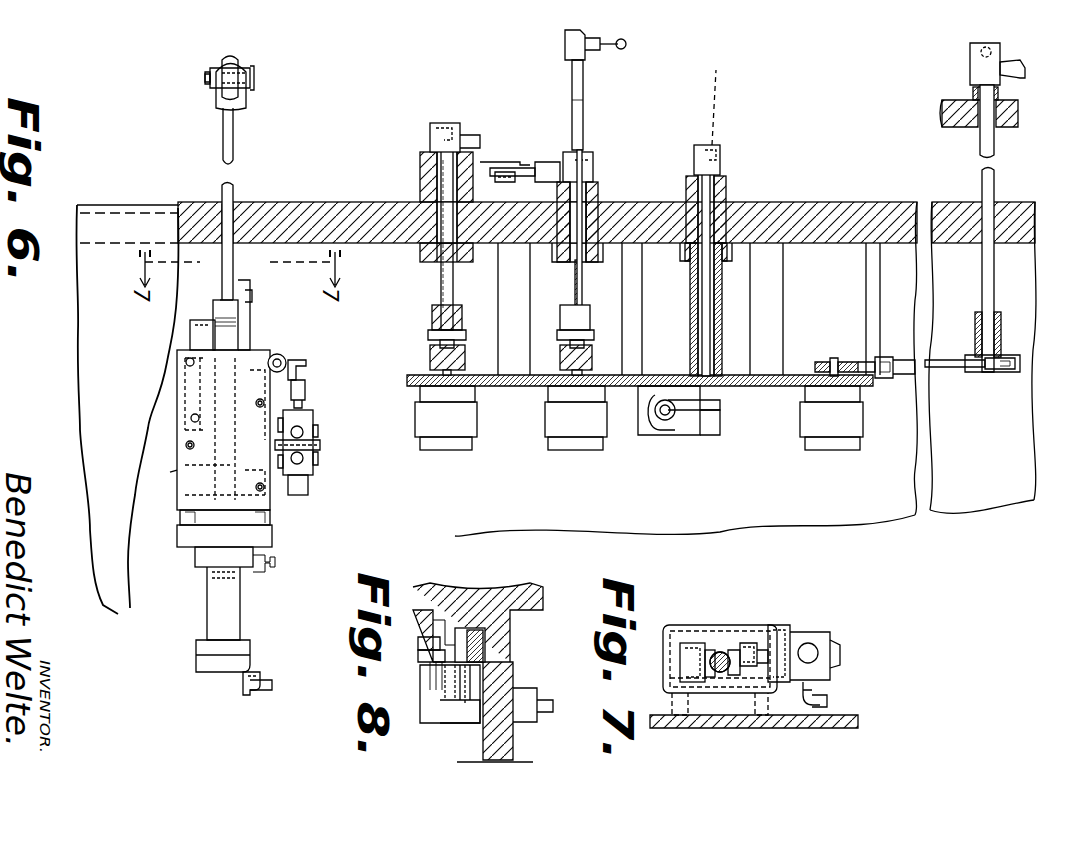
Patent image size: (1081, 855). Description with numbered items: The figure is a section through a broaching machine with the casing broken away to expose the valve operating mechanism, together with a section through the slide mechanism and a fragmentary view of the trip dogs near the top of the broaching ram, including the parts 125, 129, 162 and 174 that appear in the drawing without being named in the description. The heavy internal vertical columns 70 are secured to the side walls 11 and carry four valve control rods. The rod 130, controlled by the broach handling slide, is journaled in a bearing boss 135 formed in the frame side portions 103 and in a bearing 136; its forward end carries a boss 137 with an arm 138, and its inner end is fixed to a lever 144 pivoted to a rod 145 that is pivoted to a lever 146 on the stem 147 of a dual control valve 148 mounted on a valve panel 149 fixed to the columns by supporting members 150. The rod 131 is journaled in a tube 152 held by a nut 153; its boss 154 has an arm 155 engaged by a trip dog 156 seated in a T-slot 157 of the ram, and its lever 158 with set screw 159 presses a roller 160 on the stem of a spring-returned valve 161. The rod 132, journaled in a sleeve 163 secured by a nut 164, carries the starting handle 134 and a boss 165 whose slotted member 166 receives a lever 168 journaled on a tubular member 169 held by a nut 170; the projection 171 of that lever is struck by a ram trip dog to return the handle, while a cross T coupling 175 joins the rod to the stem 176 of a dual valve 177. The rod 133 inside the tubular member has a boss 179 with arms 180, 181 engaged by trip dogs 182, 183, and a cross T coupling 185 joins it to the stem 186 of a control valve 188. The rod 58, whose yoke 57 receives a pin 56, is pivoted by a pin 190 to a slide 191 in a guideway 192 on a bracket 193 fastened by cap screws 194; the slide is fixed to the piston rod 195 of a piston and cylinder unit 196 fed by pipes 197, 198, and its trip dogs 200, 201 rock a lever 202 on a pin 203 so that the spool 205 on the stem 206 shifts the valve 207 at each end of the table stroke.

In FIG. 7, the side walls 11 is at (805, 728).
In FIG. 6, the pin 56 is at (206, 78).
In FIG. 6, the yoke 57 is at (228, 62).
In FIG. 6, the rod 58 is at (233, 145).
In FIG. 7, the rod 58 is at (723, 652).
In FIG. 6, the vertical columns 70 is at (812, 202).
In FIG. 6, the vertical side portions 103 is at (950, 100).
In FIG. 6, the housing 125 is at (636, 349).
In FIG. 6, the pivot 129 is at (1000, 45).
In FIG. 6, the valve control rod 130 is at (982, 178).
In FIG. 6, the valve control rod 131 is at (718, 312).
In FIG. 6, the valve control rod 132 is at (584, 293).
In FIG. 6, the valve control rod 133 is at (450, 285).
In FIG. 6, the starting handle 134 is at (607, 58).
In FIG. 6, the bearing boss 135 is at (1020, 97).
In FIG. 6, the bearing 136 is at (1000, 335).
In FIG. 6, the boss 137 is at (970, 62).
In FIG. 6, the arm 138 is at (1024, 68).
In FIG. 6, the lever 144 is at (1008, 372).
In FIG. 6, the rod 145 is at (962, 368).
In FIG. 6, the lever 146 is at (866, 358).
In FIG. 6, the valve stem 147 is at (833, 360).
In FIG. 6, the control valve 148 is at (855, 420).
In FIG. 6, the valve panel 149 is at (740, 386).
In FIG. 6, the supporting members 150 is at (523, 300).
In FIG. 6, the tube 152 is at (695, 295).
In FIG. 6, the nut 153 is at (718, 300).
In FIG. 6, the boss 154 is at (694, 154).
In FIG. 8, the boss 154 is at (447, 724).
In FIG. 6, the arm 155 is at (714, 140).
In FIG. 8, the arm 155 is at (465, 712).
In FIG. 8, the trip dog 156 is at (418, 655).
In FIG. 8, the T-slot 157 is at (418, 640).
In FIG. 6, the lever 158 is at (672, 420).
In FIG. 6, the adjustable set screw 159 is at (666, 432).
In FIG. 6, the roller 160 is at (656, 435).
In FIG. 6, the valve 161 is at (692, 415).
In FIG. 6, the block 162 is at (593, 165).
In FIG. 6, the sleeve 163 is at (592, 314).
In FIG. 6, the nut 164 is at (603, 255).
In FIG. 6, the boss 165 is at (568, 182).
In FIG. 6, the slotted member 166 is at (553, 162).
In FIG. 6, the lever 168 is at (527, 163).
In FIG. 6, the tubular member 169 is at (420, 178).
In FIG. 6, the nut 170 is at (420, 255).
In FIG. 6, the projection 171 is at (527, 188).
In FIG. 8, the projection 171 is at (513, 705).
In FIG. 8, the housing 174 is at (513, 652).
In FIG. 6, the cross T coupling 175 is at (603, 348).
In FIG. 6, the valve stem 176 is at (596, 390).
In FIG. 6, the dual valve 177 is at (595, 428).
In FIG. 6, the boss 179 is at (430, 132).
In FIG. 6, the arm 180 is at (462, 135).
In FIG. 6, the arm 181 is at (440, 123).
In FIG. 8, the trip dog 182 is at (428, 690).
In FIG. 8, the trip dog 183 is at (428, 675).
In FIG. 6, the cross T coupling 185 is at (417, 341).
In FIG. 6, the valve stem 186 is at (465, 390).
In FIG. 6, the control valve 188 is at (470, 430).
In FIG. 6, the pin 190 is at (245, 350).
In FIG. 6, the slide 191 is at (238, 333).
In FIG. 7, the slide 191 is at (712, 650).
In FIG. 7, the guideway 192 is at (700, 643).
In FIG. 6, the bracket 193 is at (288, 530).
In FIG. 7, the bracket 193 is at (663, 688).
In FIG. 7, the cap screws 194 is at (800, 686).
In FIG. 6, the piston rod 195 is at (177, 470).
In FIG. 6, the piston and cylinder unit 196 is at (248, 609).
In FIG. 6, the pipe 197 is at (288, 575).
In FIG. 6, the pipe 198 is at (262, 695).
In FIG. 6, the trip dog 200 is at (252, 296).
In FIG. 7, the trip dog 200 is at (750, 643).
In FIG. 6, the trip dog 201 is at (223, 430).
In FIG. 6, the lever 202 is at (283, 357).
In FIG. 7, the lever 202 is at (765, 650).
In FIG. 6, the pin 203 is at (305, 375).
In FIG. 7, the pin 203 is at (785, 625).
In FIG. 6, the spool 205 is at (313, 420).
In FIG. 6, the valve stem 206 is at (315, 390).
In FIG. 6, the valve 207 is at (312, 490).